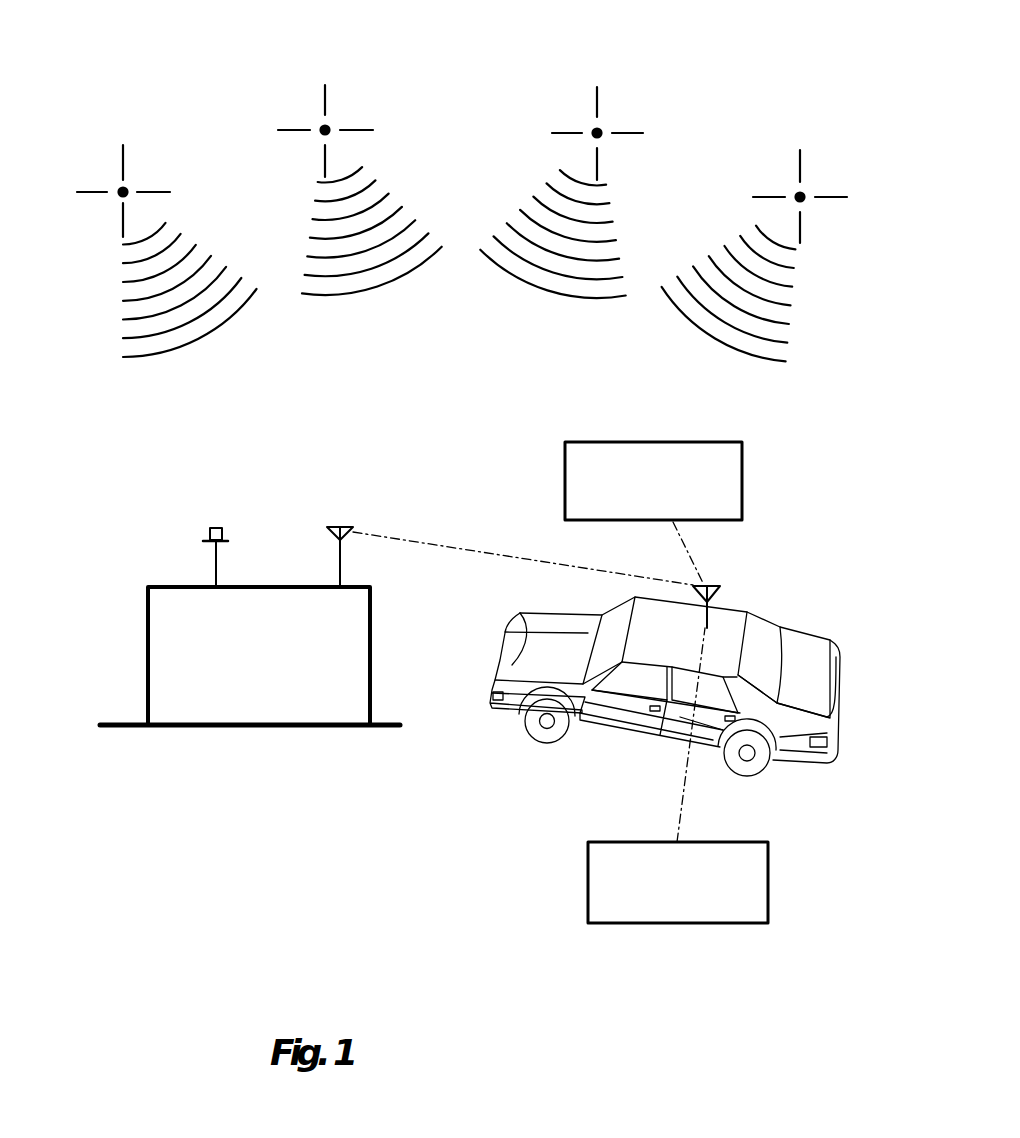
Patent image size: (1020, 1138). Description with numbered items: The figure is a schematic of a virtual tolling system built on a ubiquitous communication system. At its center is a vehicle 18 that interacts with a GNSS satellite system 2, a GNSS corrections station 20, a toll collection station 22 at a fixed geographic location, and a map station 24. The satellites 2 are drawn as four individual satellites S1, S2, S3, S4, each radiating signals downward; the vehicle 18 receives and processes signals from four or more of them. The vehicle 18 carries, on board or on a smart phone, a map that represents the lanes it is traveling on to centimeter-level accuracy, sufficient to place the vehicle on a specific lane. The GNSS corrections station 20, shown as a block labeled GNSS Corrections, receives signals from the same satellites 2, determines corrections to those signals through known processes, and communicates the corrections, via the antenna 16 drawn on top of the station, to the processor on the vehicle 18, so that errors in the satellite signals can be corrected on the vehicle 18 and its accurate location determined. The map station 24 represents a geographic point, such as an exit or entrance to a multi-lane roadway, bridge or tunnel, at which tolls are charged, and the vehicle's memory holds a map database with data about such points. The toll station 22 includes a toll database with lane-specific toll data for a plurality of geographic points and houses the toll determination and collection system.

The GNSS satellite system 2 is at (477, 462).
The satellite S1 is at (128, 183).
The satellite S2 is at (330, 127).
The satellite S3 is at (600, 128).
The satellite S4 is at (803, 192).
The antenna of GNSS corrections station 16 is at (340, 525).
The vehicle 18 is at (681, 666).
The GNSS corrections station 20 is at (262, 662).
The toll collection station 22 is at (220, 528).
The map station 24 is at (690, 915).